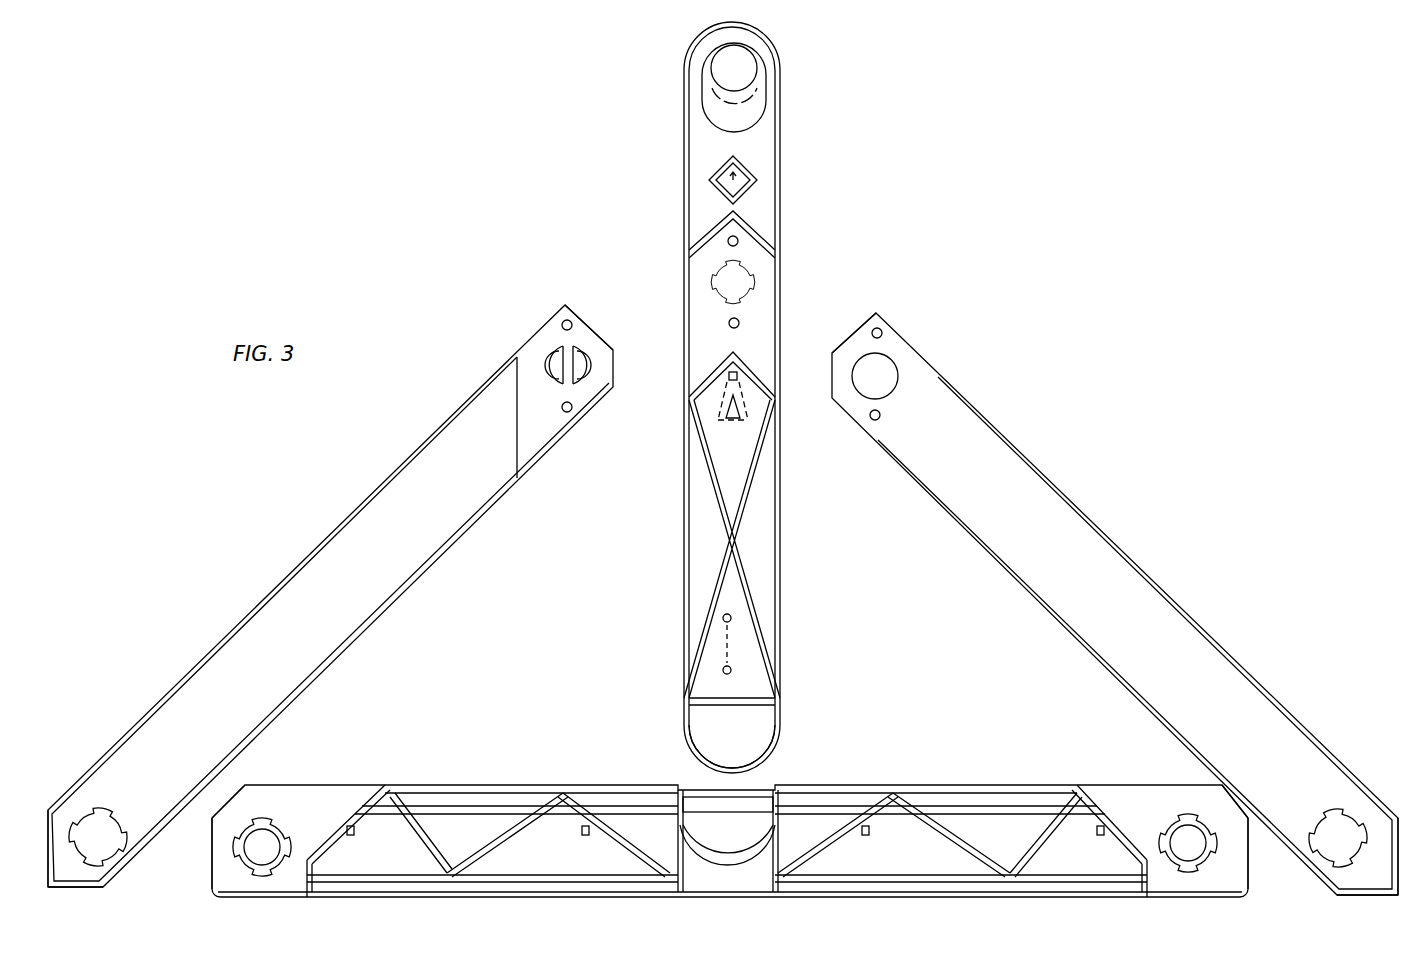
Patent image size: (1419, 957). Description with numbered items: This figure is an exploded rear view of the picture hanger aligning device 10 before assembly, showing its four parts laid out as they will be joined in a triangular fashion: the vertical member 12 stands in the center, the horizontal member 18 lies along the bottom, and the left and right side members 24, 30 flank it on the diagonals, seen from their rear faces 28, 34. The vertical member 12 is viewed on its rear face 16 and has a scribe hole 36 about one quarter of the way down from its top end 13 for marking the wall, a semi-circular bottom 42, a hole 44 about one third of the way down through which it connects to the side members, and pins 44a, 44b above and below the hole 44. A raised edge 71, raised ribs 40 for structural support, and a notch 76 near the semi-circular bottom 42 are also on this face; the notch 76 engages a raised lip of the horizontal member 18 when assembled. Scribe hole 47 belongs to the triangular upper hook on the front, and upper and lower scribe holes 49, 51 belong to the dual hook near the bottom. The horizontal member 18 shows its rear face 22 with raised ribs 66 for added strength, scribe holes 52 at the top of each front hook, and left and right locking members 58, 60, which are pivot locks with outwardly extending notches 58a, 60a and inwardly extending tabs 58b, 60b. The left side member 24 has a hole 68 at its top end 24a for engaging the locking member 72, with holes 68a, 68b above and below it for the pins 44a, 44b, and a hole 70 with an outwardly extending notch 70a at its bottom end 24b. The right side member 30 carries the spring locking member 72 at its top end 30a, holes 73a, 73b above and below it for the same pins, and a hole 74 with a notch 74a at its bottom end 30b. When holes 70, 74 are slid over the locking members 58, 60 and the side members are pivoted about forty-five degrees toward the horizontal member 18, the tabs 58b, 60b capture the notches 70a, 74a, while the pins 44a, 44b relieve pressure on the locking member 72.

The picture hanger aligning device 10 is at (806, 186).
The vertical member 12 is at (782, 96).
The top end 13 is at (763, 46).
The rear face 16 is at (764, 151).
The horizontal member 18 is at (730, 841).
The rear face 22 is at (797, 857).
The left side member 24 is at (1113, 540).
The top end 24a is at (852, 337).
The bottom end 24b is at (1380, 895).
The rear face 28 is at (1137, 600).
The right side member 30 is at (303, 553).
The top end 30a is at (589, 329).
The bottom end 30b is at (90, 891).
The rear face 34 is at (250, 653).
The scribe hole 36 is at (727, 166).
The raised ribs 40 is at (750, 492).
The semi-circular bottom 42 is at (716, 773).
The hole 44 is at (718, 292).
The pin 44a is at (727, 241).
The pin 44b is at (741, 324).
The scribe hole 47 is at (730, 368).
The upper scribe hole 49 is at (722, 618).
The lower scribe hole 51 is at (722, 670).
The scribe holes 52 is at (869, 835).
The left locking member 58 is at (1197, 845).
The outwardly extending notch 58a is at (1186, 815).
The inwardly extending tab 58b is at (1163, 838).
The right locking member 60 is at (262, 848).
The outwardly extending notch 60a is at (266, 820).
The inwardly extending tab 60b is at (288, 835).
The raised ribs 66 is at (505, 860).
The hole 68 is at (887, 380).
The hole 68a is at (882, 336).
The hole 68b is at (882, 418).
The hole 70 is at (1328, 822).
The outwardly extending notch 70a is at (1362, 858).
The raised edge 71 is at (693, 75).
The locking member 72 is at (546, 358).
The hole 73a is at (562, 322).
The hole 73b is at (570, 412).
The hole 74 is at (108, 830).
The outwardly extending notch 74a is at (88, 815).
The notch 76 is at (765, 705).